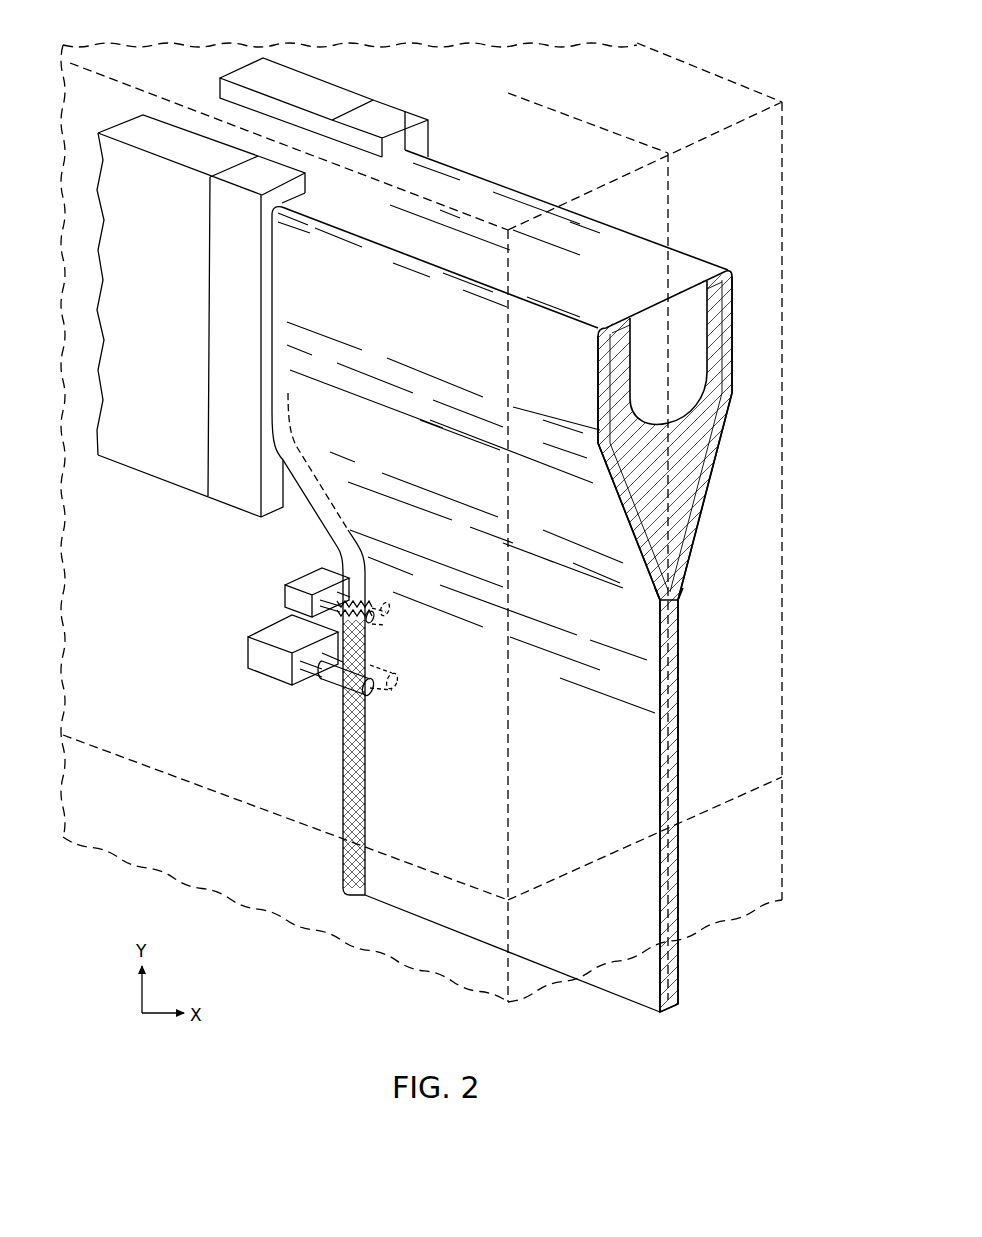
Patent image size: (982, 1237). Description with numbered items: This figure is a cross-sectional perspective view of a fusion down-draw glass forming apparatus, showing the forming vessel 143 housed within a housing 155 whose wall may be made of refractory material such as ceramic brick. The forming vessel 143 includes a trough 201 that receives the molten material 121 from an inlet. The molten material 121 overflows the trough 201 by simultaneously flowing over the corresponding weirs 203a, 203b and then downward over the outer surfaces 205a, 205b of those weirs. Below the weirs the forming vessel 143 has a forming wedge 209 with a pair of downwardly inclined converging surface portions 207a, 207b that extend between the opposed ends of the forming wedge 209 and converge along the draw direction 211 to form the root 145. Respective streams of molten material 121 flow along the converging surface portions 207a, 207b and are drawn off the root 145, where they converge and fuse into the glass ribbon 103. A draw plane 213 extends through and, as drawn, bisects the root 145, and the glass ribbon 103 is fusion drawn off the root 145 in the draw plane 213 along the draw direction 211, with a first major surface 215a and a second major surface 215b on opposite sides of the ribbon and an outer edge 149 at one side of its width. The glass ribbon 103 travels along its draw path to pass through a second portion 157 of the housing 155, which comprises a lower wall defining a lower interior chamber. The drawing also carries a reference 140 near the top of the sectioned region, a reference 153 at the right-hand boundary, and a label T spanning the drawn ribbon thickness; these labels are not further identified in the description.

The housing 155 is at (664, 47).
The build platform 140 is at (759, 126).
The forming vessel 143 is at (718, 216).
The draw plane 213 is at (670, 170).
The first plane 153 is at (783, 418).
The second portion of the housing 157 is at (783, 833).
The weir 203a is at (611, 328).
The weir 203b is at (716, 275).
The outer surface of weir 205a is at (597, 382).
The outer surface of weir 205b is at (736, 317).
The molten material 121 is at (698, 332).
The trough 201 is at (700, 358).
The forming wedge 209 is at (698, 436).
The downwardly inclined converging surface portion 207a is at (646, 554).
The downwardly inclined converging surface portion 207b is at (696, 535).
The root 145 is at (672, 600).
The glass ribbon 103 is at (647, 705).
The first major surface of the glass ribbon 215a is at (654, 749).
The second major surface of the glass ribbon 215b is at (684, 721).
The thickness T is at (640, 810).
The draw direction 211 is at (669, 981).
The outer edge of the glass ribbon 149 is at (343, 755).